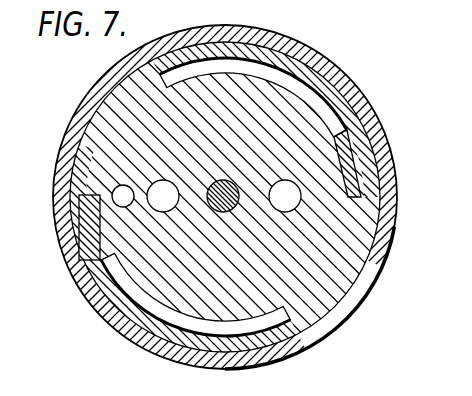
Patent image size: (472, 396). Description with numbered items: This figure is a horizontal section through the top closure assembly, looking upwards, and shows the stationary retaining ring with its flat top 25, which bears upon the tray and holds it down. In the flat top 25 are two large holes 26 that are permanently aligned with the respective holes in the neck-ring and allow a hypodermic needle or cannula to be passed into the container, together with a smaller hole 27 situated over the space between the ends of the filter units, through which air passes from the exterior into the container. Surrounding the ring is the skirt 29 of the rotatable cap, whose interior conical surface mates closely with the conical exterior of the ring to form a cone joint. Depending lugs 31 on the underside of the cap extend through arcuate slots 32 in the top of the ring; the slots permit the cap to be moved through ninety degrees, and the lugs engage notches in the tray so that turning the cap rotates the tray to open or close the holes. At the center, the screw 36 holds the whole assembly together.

The flat top 25 is at (333, 278).
The large holes 26 is at (293, 200).
The smaller hole 27 is at (118, 185).
The skirt 29 is at (365, 263).
The depending lugs 31 is at (352, 165).
The arcuate slots 32 is at (308, 95).
The central screw 36 is at (221, 212).